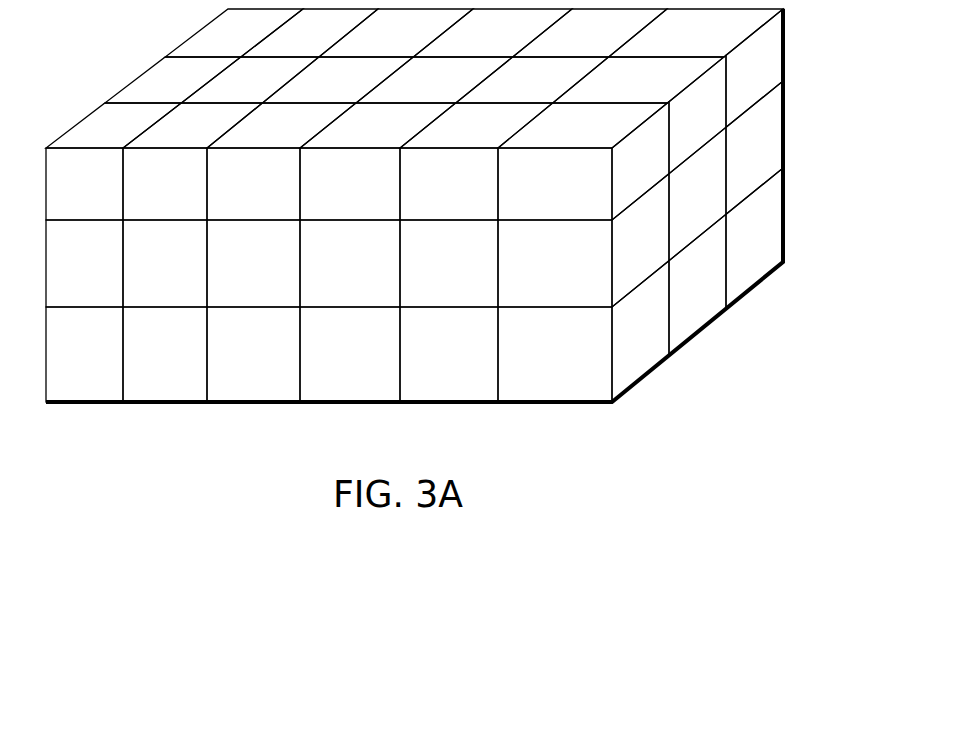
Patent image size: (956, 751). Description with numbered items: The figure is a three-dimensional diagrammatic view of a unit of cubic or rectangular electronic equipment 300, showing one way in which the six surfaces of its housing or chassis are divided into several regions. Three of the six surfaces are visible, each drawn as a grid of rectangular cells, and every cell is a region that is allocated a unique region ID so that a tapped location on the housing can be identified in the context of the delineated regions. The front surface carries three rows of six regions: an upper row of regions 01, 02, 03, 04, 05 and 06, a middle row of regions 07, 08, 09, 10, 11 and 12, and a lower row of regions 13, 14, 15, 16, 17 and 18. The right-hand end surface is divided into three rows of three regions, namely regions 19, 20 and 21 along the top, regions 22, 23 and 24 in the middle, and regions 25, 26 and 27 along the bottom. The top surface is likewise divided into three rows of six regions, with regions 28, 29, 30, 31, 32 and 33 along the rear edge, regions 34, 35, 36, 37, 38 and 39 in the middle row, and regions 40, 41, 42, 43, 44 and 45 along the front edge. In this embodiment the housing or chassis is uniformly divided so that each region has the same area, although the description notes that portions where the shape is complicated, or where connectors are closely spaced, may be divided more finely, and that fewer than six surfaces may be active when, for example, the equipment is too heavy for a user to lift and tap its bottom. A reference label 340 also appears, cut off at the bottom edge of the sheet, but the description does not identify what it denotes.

The electronic equipment 300 is at (469, 205).
The block arrangement (partially shown) 340 is at (476, 745).
The region 01 is at (84, 184).
The region 02 is at (165, 184).
The region 03 is at (253, 184).
The region 04 is at (350, 184).
The region 05 is at (449, 184).
The region 06 is at (555, 184).
The region 07 is at (84, 263).
The region 08 is at (165, 263).
The region 09 is at (253, 263).
The region 10 is at (350, 263).
The region 11 is at (449, 263).
The region 12 is at (555, 263).
The region 13 is at (84, 354).
The region 14 is at (165, 354).
The region 15 is at (253, 354).
The region 16 is at (350, 354).
The region 17 is at (449, 354).
The region 18 is at (555, 354).
The region 19 is at (640, 161).
The region 20 is at (697, 114).
The region 21 is at (754, 68).
The region 22 is at (640, 240).
The region 23 is at (697, 193).
The region 24 is at (754, 147).
The region 25 is at (640, 331).
The region 26 is at (697, 284).
The region 27 is at (754, 238).
The region 28 is at (234, 33).
The region 29 is at (309, 33).
The region 30 is at (396, 33).
The region 31 is at (492, 33).
The region 32 is at (590, 33).
The region 33 is at (696, 33).
The region 34 is at (173, 80).
The region 35 is at (250, 80).
The region 36 is at (337, 80).
The region 37 is at (434, 80).
The region 38 is at (532, 80).
The region 39 is at (638, 80).
The region 40 is at (113, 125).
The region 41 is at (192, 125).
The region 42 is at (281, 125).
The region 43 is at (378, 125).
The region 44 is at (476, 125).
The region 45 is at (582, 125).